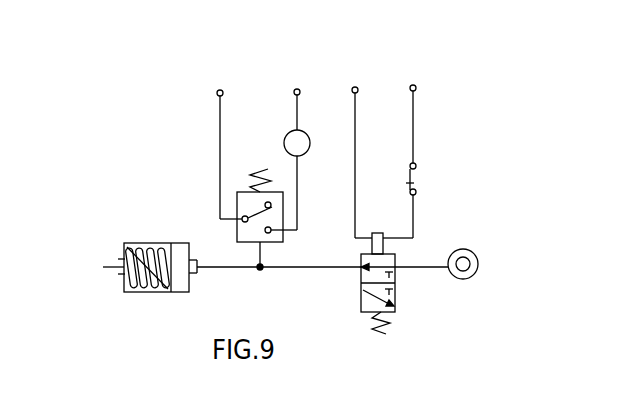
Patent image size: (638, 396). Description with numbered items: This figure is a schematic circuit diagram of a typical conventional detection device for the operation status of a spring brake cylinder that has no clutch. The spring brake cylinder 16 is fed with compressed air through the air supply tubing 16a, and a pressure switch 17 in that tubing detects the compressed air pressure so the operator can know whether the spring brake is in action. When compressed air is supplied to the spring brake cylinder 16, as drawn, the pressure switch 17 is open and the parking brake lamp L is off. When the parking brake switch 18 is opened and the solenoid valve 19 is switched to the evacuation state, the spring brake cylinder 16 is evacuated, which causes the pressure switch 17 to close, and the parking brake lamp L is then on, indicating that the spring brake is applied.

The spring brake cylinder 16 is at (153, 240).
The air supply tubing 16a is at (220, 269).
The pressure switch 17 is at (237, 236).
The parking brake switch 18 is at (426, 161).
The solenoid valve 19 is at (399, 295).
The parking brake lamp L is at (286, 135).